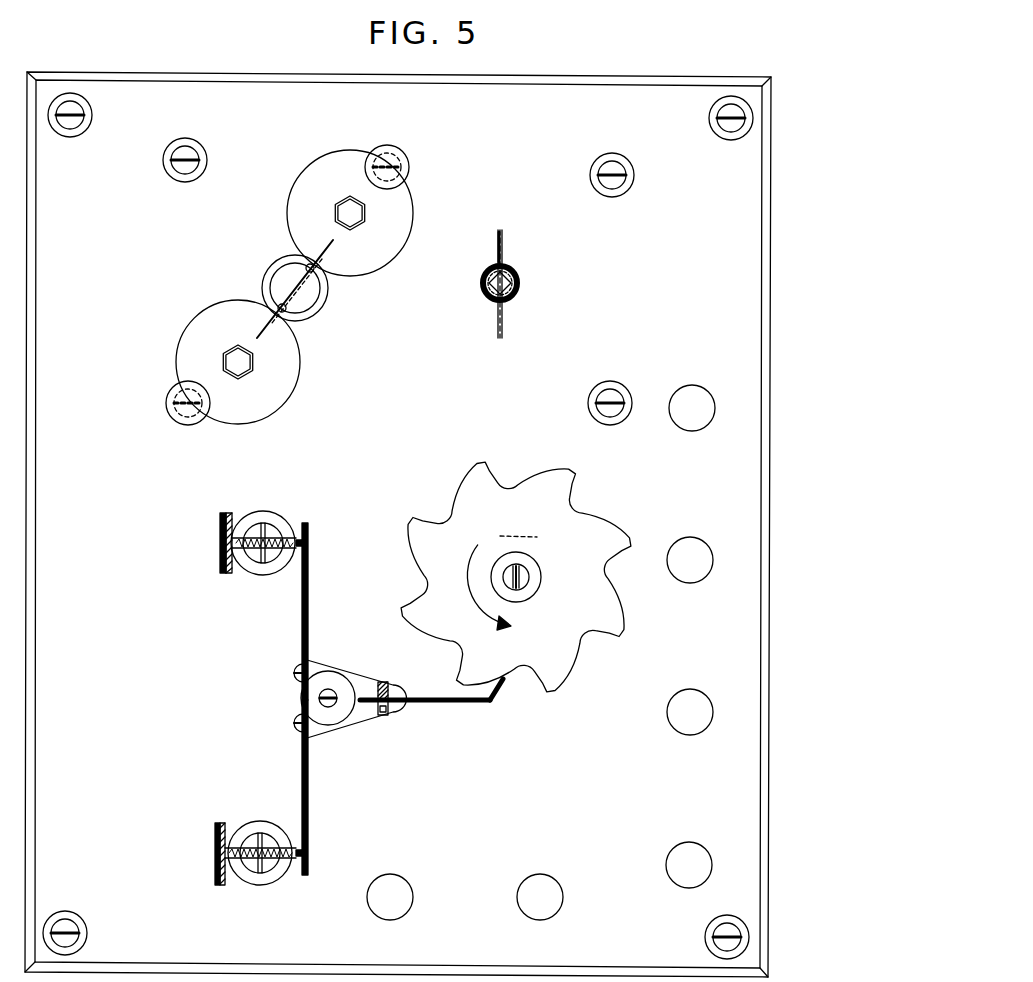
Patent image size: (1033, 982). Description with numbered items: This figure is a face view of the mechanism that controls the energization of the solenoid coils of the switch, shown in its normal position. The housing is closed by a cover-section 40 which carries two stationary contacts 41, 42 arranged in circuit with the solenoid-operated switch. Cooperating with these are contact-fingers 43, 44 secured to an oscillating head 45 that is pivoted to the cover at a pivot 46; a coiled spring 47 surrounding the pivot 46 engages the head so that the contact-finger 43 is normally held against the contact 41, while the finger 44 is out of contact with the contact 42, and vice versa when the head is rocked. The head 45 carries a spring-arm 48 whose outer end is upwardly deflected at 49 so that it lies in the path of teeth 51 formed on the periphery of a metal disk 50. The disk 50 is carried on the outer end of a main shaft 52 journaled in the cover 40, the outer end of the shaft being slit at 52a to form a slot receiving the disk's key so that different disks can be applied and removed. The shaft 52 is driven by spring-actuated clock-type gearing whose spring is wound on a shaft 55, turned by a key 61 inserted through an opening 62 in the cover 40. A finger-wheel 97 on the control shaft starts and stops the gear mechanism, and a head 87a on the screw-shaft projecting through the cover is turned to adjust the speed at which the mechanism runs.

The cover-section 40 is at (690, 95).
The finger-wheel 97 is at (405, 202).
The head 87a is at (290, 373).
The key 61 is at (505, 256).
The opening 62 is at (514, 273).
The shaft 55 is at (520, 290).
The main shaft 52 is at (505, 572).
The metal disk 50 is at (567, 523).
The slit 52a is at (526, 580).
The teeth 51 is at (621, 631).
The upwardly deflected end 49 is at (498, 696).
The spring-arm 48 is at (455, 705).
The contact 41 is at (272, 530).
The contact-finger 43 is at (309, 612).
The oscillating head 45 is at (336, 673).
The coiled spring 47 is at (316, 688).
The pivot 46 is at (333, 708).
The contact 42 is at (256, 845).
The contact-finger 44 is at (309, 822).